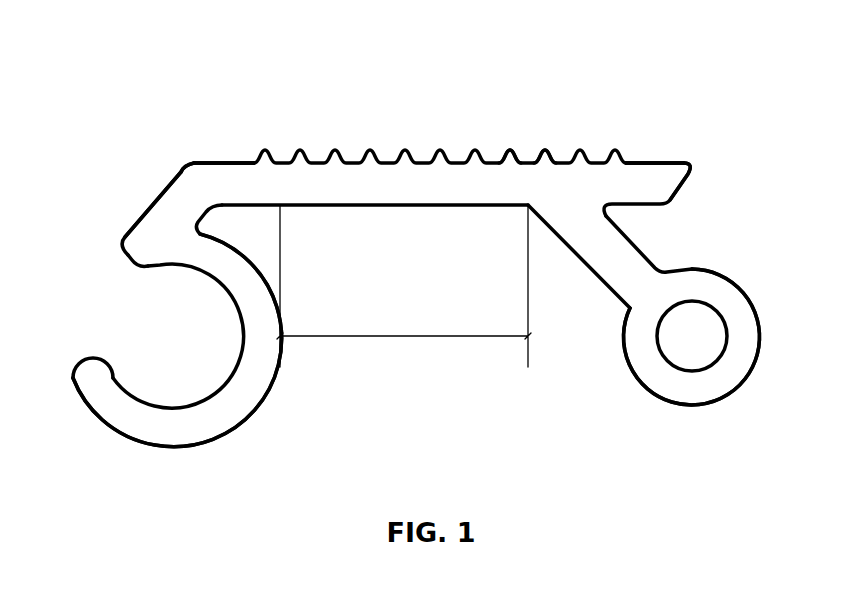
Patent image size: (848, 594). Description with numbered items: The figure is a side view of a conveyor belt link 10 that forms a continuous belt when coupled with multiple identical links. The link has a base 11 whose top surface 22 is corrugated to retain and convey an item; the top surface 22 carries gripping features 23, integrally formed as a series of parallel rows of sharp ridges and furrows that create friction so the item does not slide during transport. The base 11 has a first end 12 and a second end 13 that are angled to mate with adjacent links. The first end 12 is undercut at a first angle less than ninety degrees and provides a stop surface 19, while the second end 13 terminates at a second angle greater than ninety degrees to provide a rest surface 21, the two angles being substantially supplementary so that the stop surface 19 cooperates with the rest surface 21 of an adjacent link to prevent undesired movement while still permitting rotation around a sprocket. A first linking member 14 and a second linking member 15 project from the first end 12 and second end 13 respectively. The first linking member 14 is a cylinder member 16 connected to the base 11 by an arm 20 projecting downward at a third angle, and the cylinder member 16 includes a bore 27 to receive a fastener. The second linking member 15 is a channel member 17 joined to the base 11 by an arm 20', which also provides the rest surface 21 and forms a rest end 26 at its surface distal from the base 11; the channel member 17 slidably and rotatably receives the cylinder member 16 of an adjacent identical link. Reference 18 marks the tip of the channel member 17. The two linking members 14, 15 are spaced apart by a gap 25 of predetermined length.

The conveyor belt link 10 is at (280, 84).
The base 11 is at (365, 180).
The first end 12 is at (654, 125).
The second end 13 is at (159, 119).
The first linking member 14 is at (791, 296).
The second linking member 15 is at (53, 305).
The cylinder member 16 is at (715, 390).
The channel member 17 is at (190, 430).
The hook tip 18 is at (85, 356).
The stop surface 19 is at (688, 186).
The arm 20 is at (613, 256).
The arm 20' is at (153, 195).
The rest surface 21 is at (136, 222).
The top surface 22 is at (421, 163).
The gripping features 23 is at (544, 150).
The gap 25 is at (437, 338).
The rest end 26 is at (132, 262).
The bore 27 is at (663, 355).